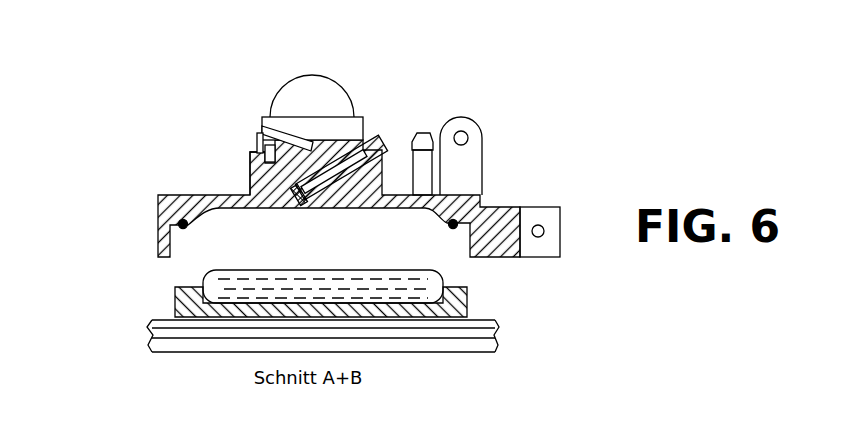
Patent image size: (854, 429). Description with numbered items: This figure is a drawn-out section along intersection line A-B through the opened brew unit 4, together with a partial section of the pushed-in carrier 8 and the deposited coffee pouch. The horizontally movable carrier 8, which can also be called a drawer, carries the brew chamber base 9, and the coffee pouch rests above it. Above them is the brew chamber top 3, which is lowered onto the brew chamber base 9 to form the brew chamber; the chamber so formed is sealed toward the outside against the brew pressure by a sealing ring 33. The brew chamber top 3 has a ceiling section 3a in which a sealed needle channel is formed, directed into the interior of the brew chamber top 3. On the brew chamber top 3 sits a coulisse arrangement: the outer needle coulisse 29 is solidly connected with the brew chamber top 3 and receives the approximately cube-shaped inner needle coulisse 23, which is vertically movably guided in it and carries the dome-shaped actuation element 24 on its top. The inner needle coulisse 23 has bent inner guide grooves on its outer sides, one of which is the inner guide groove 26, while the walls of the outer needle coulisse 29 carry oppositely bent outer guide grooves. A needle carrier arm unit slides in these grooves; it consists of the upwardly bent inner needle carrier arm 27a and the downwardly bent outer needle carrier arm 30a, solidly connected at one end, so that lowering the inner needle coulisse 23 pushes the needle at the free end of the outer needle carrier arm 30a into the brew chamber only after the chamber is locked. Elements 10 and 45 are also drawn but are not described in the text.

The brew chamber top 3 is at (160, 220).
The ceiling section 3a is at (187, 195).
The brew unit 4 is at (108, 272).
The carrier 8 is at (485, 344).
The brew chamber base 9 is at (455, 308).
The lens / window 10 is at (425, 276).
The inner needle coulisse 23 is at (363, 125).
The dome-shaped actuation element 24 is at (306, 80).
The inner guide groove 26 is at (263, 128).
The inner needle carrier arm 27a is at (313, 140).
The outer needle coulisse 29 is at (254, 158).
The outer needle carrier arm 30a is at (372, 142).
The sealing ring 33 is at (183, 225).
The pin 45 is at (299, 202).